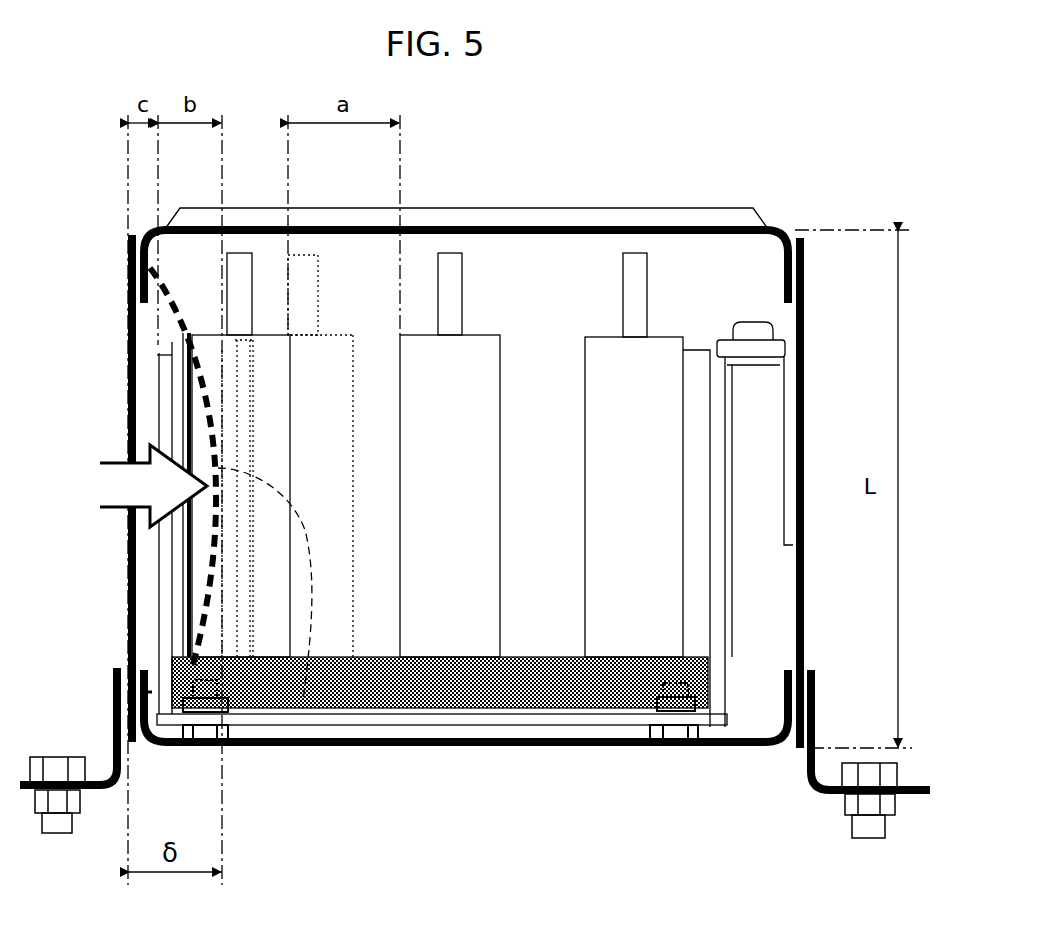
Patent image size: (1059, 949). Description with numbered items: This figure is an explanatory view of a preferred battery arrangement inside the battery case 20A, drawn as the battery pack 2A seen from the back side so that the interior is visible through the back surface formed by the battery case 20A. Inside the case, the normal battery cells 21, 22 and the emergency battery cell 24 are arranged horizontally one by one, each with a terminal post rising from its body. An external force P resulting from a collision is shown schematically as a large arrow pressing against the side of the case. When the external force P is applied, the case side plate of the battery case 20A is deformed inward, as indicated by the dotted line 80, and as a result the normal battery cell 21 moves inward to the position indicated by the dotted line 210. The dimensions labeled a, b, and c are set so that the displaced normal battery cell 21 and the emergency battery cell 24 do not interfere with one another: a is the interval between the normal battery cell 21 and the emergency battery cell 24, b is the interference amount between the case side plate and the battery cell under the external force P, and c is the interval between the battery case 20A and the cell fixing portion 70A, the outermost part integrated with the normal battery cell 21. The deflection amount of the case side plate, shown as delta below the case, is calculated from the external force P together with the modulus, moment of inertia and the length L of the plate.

The battery pack 2A is at (826, 166).
The battery case 20A is at (128, 600).
The normal battery cell 21 is at (197, 335).
The dotted line 210 is at (340, 335).
The emergency battery cell 24 is at (485, 335).
The normal battery cell 22 is at (668, 335).
The cell fixing portion 70A is at (202, 720).
The dotted line 80 is at (303, 700).
The external force P is at (98, 487).